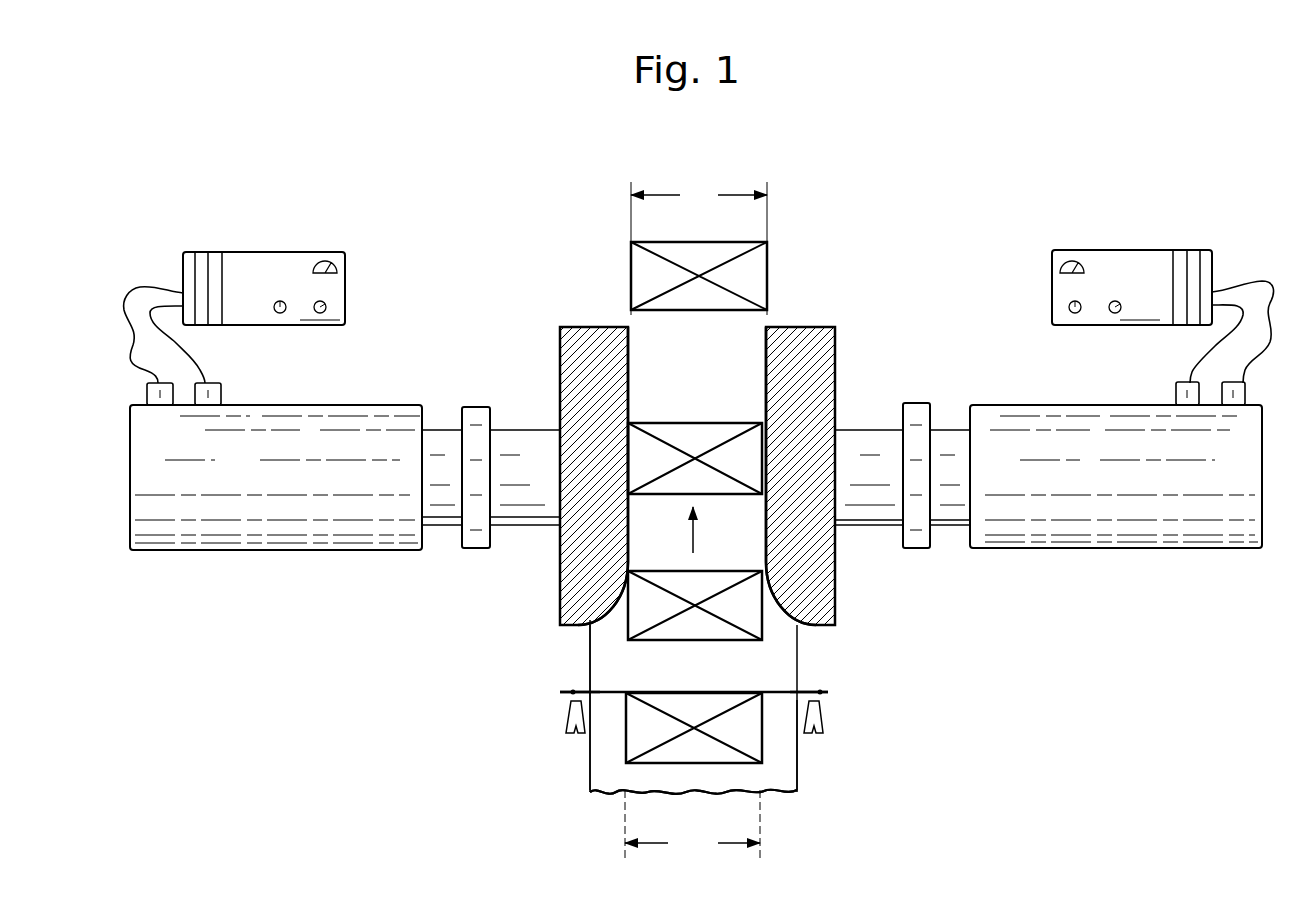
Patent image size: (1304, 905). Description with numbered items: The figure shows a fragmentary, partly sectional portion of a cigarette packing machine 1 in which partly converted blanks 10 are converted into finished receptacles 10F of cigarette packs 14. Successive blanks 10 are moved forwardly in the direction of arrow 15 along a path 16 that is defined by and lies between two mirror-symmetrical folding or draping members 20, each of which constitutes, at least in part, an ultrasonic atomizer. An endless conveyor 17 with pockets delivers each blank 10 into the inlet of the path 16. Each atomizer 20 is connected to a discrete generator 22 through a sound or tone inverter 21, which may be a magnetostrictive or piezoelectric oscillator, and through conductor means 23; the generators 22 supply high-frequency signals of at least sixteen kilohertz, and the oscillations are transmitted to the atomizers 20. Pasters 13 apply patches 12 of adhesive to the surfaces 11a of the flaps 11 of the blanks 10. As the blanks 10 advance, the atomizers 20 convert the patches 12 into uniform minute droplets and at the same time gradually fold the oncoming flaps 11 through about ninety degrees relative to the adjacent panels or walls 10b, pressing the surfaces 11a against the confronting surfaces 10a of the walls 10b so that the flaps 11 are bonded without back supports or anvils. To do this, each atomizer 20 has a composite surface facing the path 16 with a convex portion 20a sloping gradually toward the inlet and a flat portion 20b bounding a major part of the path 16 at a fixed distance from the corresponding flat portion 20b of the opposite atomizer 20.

The cigarette packing machine 1 is at (857, 150).
The partly converted blank 10 is at (612, 699).
The surface of panel 10a is at (614, 752).
The panel or wall 10b is at (640, 648).
The receptacle 10F is at (681, 408).
The flap 11 is at (590, 741).
The surface of flap 11a is at (618, 603).
The adhesive patch 12 is at (636, 624).
The paster 13 is at (563, 713).
The cigarette pack 14 is at (772, 256).
The arrow 15 is at (698, 541).
The path 16 is at (701, 384).
The endless conveyor 17 is at (772, 797).
The draping member 20 is at (613, 338).
The convex portion 20a is at (608, 624).
The flat portion 20b is at (628, 392).
The sound or tone inverter 21 is at (250, 525).
The generator 22 is at (247, 267).
The conductor means 23 is at (130, 342).